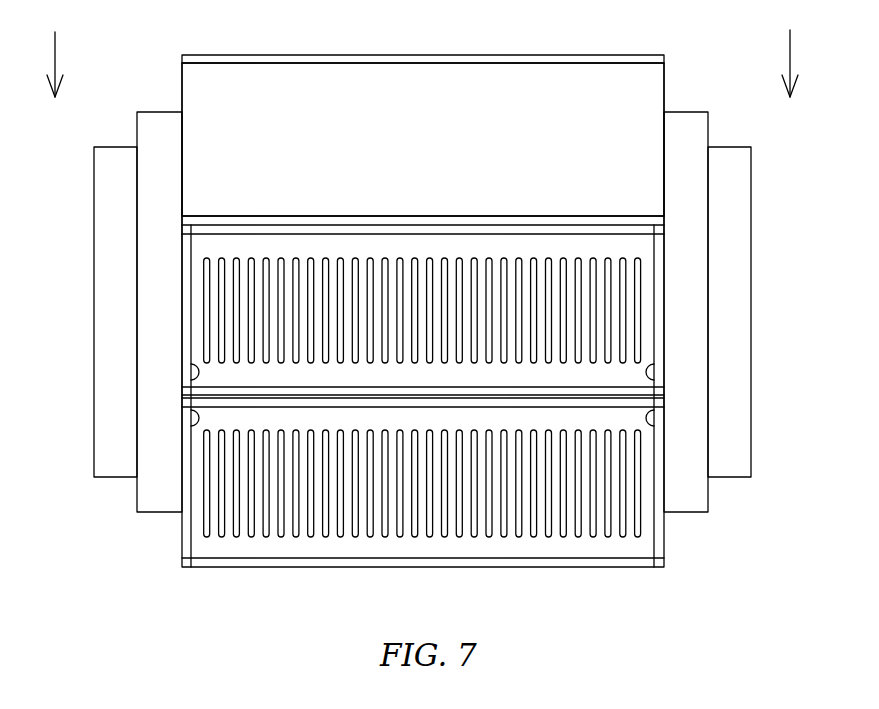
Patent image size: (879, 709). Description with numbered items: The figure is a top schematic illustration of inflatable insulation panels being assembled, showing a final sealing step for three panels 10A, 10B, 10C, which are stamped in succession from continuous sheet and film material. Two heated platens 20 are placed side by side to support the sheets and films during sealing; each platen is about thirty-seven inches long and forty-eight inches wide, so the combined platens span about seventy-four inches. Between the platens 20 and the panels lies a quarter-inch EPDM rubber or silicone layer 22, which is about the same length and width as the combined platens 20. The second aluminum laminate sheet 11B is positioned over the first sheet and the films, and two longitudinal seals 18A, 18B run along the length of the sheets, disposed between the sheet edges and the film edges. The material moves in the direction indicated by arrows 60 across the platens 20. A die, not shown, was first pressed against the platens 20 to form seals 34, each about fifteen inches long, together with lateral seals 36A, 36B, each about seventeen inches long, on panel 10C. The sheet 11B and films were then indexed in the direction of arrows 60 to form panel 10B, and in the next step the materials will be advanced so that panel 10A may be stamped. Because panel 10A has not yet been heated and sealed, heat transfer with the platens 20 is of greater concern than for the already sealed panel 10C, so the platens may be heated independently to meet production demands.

The panel 10A is at (668, 71).
The panel 10B is at (670, 308).
The panel 10C is at (178, 522).
The second aluminum laminate sheet 11B is at (442, 147).
The longitudinal seal 18A is at (424, 63).
The longitudinal seal 18B is at (424, 234).
The platen 20 is at (94, 182).
The EPDM rubber layer 22 is at (708, 441).
The seals 34 is at (641, 277).
The lateral seal 36A is at (656, 364).
The lateral seal 36B is at (190, 364).
The arrows 60 is at (55, 55).